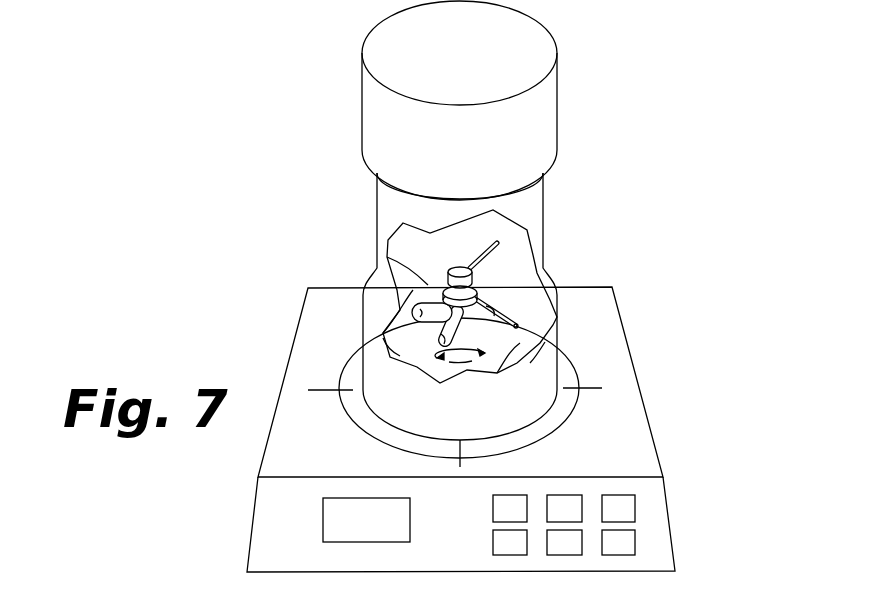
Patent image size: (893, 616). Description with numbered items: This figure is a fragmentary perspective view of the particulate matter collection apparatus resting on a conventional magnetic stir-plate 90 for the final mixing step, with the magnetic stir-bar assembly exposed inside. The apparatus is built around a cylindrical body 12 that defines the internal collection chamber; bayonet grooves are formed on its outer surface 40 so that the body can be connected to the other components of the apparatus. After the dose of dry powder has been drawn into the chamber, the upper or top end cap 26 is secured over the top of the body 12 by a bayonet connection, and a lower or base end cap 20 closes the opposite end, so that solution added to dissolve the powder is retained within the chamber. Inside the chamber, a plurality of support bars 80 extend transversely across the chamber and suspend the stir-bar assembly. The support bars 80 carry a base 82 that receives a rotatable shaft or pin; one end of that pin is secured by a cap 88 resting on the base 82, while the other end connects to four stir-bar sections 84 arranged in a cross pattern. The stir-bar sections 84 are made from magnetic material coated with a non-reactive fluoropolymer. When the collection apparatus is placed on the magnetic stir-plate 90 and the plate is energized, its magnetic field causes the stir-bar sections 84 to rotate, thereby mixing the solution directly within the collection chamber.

The body 12 is at (526, 220).
The upper end cap 26 is at (532, 108).
The outer surface 40 is at (543, 190).
The cap 88 is at (499, 246).
The base 82 is at (443, 288).
The support bars 80 is at (395, 275).
The stir-bar sections 84 is at (402, 350).
The lower end cap 20 is at (472, 424).
The magnetic stir-plate 90 is at (645, 393).